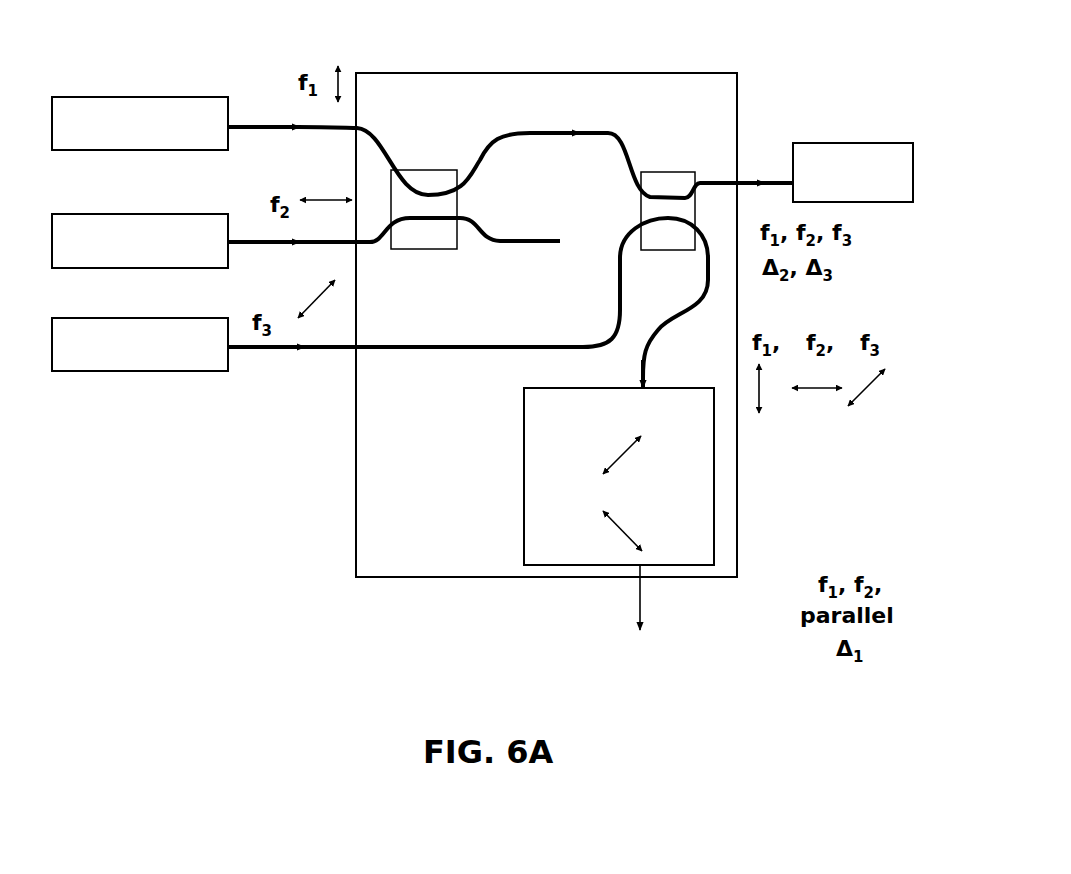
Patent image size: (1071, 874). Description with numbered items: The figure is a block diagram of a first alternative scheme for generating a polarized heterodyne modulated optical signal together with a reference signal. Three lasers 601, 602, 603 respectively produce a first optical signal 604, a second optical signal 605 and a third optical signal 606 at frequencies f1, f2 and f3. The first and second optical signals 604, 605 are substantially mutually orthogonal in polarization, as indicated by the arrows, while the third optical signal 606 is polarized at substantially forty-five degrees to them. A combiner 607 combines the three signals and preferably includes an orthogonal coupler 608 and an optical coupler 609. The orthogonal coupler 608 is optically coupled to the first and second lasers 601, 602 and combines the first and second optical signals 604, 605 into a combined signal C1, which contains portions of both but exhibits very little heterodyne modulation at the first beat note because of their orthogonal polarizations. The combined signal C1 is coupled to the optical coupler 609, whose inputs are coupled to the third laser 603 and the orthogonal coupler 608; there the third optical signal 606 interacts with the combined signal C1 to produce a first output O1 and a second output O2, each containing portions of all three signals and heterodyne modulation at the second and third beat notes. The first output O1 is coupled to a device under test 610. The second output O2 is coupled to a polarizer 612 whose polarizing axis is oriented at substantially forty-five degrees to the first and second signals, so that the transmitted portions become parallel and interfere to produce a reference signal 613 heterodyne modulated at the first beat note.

The first laser 601 is at (195, 97).
The second laser 602 is at (160, 214).
The third laser 603 is at (178, 371).
The first optical signal 604 is at (290, 120).
The second optical signal 605 is at (270, 235).
The third optical signal 606 is at (302, 350).
The combiner 607 is at (356, 549).
The orthogonal coupler 608 is at (418, 170).
The optical coupler 609 is at (678, 172).
The device under test (DUT) 610 is at (840, 143).
The polarizer 612 is at (524, 519).
The reference signal 613 is at (650, 623).
The combined signal C1 is at (576, 128).
The first output O1 is at (745, 180).
The second output O2 is at (650, 375).